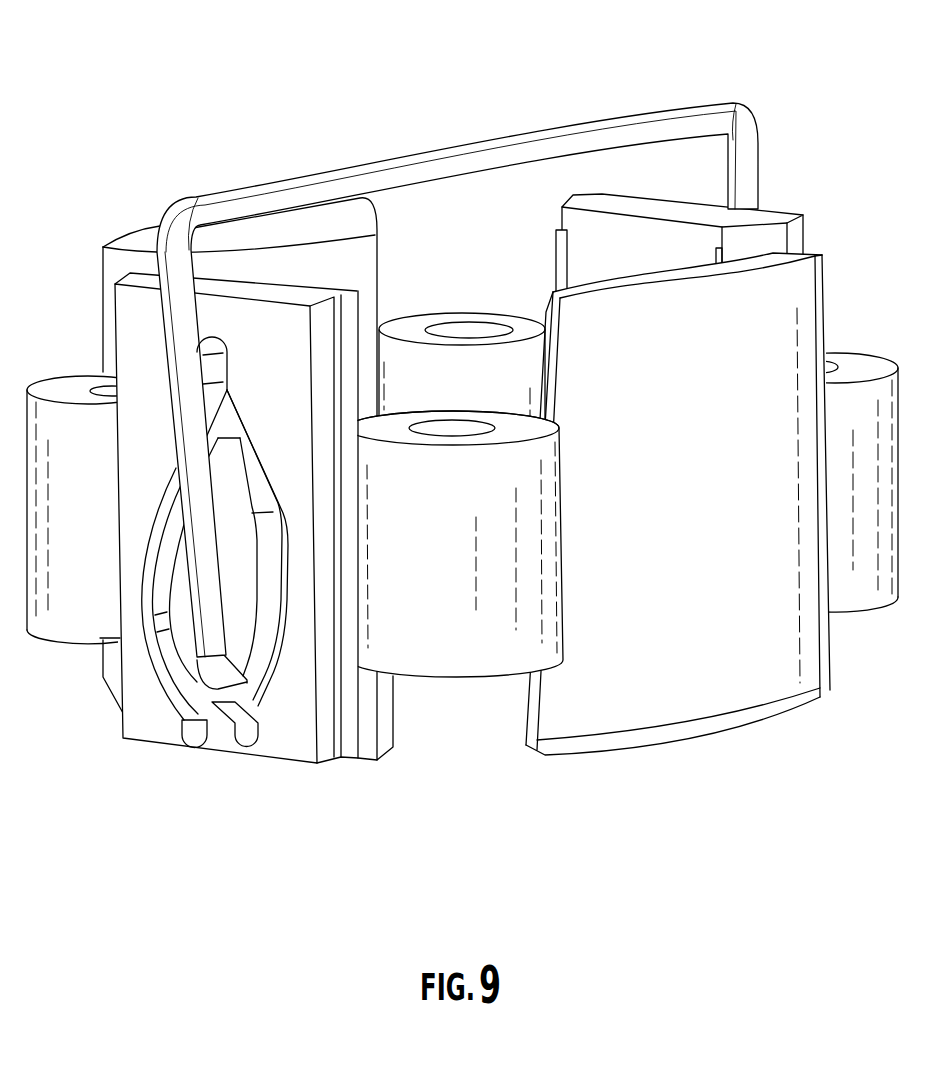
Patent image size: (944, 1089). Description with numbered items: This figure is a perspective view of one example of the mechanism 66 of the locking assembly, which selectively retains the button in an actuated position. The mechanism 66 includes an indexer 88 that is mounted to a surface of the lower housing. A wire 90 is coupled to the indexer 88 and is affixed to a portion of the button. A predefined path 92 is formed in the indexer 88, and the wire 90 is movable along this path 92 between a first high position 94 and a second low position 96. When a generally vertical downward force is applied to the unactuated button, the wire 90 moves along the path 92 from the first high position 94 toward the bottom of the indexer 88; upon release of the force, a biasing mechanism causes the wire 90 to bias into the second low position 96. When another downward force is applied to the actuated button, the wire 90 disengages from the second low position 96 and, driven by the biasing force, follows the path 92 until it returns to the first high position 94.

The mechanism 66 is at (458, 420).
The indexer 88 is at (658, 617).
The wire 90 is at (766, 131).
The predefined path 92 is at (140, 593).
The first high position 94 is at (213, 363).
The second low position 96 is at (210, 680).